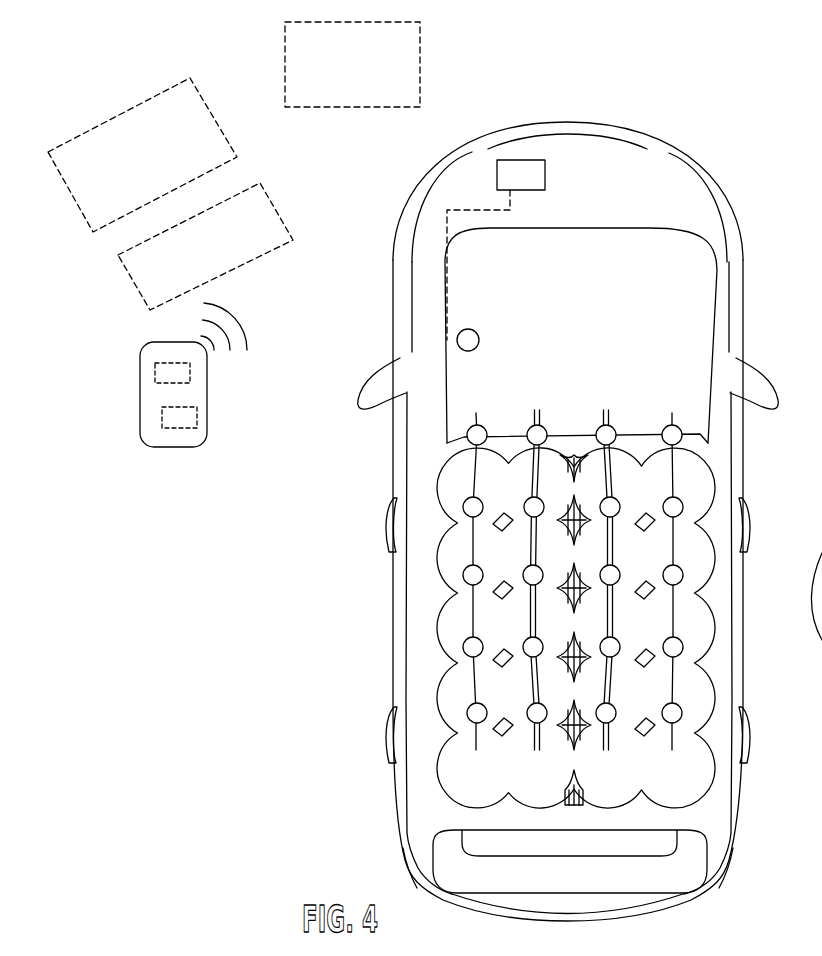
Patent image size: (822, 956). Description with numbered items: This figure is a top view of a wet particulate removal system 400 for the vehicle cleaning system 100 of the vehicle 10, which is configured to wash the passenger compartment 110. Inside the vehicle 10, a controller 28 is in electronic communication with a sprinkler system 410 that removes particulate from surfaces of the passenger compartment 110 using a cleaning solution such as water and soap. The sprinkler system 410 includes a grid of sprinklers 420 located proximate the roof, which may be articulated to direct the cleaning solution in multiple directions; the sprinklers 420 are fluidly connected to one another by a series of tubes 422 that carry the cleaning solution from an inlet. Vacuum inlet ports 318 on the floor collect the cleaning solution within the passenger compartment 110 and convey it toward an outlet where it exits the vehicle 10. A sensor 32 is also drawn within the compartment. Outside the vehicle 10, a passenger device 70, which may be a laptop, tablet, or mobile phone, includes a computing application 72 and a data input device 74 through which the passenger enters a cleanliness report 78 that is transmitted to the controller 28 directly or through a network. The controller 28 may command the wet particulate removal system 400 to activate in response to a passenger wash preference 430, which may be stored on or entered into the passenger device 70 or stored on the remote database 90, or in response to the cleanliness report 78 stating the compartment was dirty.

The vehicle 10 is at (653, 157).
The controller 28 is at (496, 250).
The sensor 32 is at (470, 329).
The passenger device 70 is at (158, 341).
The computing application 72 is at (190, 373).
The data input device 74 is at (197, 418).
The cleanliness report 78 is at (252, 178).
The remote database 90 is at (422, 56).
The vehicle cleaning system 100 is at (390, 186).
The passenger compartment 110 is at (512, 780).
The vacuum inlet ports 318 is at (567, 782).
The wet particulate removal system 400 is at (380, 252).
The sprinkler system 410 is at (576, 366).
The sprinklers 420 is at (684, 434).
The tubes 422 is at (673, 543).
The passenger wash preference 430 is at (175, 84).